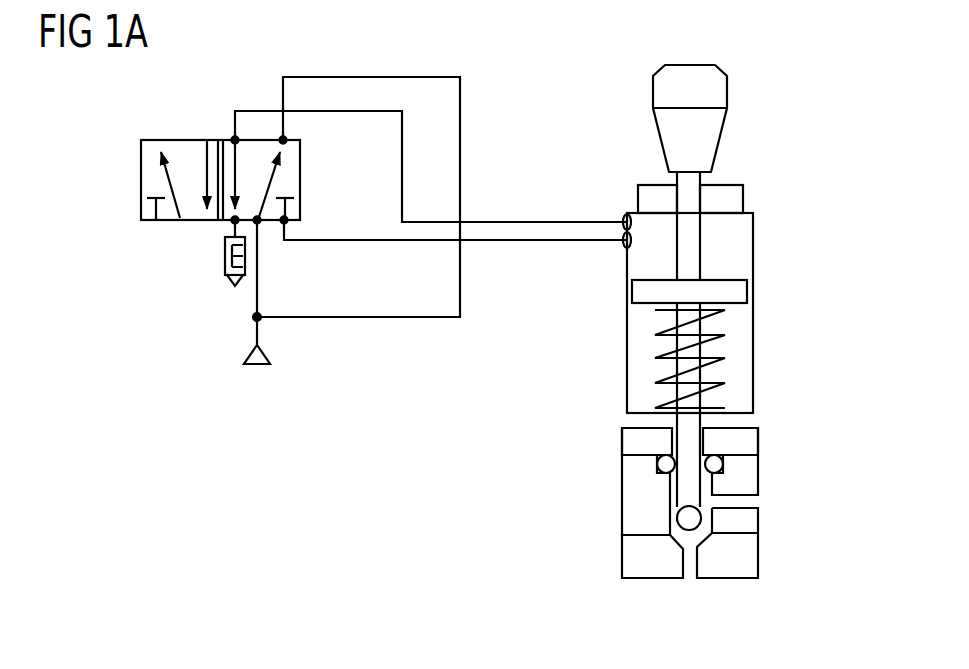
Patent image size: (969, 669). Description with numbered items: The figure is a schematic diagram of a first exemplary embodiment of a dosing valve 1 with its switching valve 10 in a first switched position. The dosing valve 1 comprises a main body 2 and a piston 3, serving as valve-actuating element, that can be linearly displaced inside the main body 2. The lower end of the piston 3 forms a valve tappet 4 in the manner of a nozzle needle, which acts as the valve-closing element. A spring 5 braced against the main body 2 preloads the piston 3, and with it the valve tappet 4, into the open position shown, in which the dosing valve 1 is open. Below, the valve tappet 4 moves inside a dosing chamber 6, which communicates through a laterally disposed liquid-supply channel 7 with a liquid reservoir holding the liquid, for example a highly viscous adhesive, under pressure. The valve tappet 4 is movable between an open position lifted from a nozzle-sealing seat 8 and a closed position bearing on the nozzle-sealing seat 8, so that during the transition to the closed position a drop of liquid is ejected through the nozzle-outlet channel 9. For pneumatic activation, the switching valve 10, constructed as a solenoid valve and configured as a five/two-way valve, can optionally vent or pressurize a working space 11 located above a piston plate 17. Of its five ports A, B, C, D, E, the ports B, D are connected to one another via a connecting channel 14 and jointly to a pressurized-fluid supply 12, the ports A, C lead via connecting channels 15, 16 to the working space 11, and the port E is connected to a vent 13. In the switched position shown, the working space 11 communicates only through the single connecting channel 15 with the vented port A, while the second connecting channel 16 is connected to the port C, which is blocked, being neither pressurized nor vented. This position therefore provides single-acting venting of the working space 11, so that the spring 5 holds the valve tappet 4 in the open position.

The dosing valve 1 is at (770, 115).
The main body 2 is at (754, 262).
The piston 3 is at (711, 376).
The valve tappet 4 is at (690, 496).
The spring 5 is at (719, 326).
The dosing chamber 6 is at (668, 522).
The liquid-supply channel 7 is at (752, 505).
The nozzle-sealing seat 8 is at (658, 557).
The nozzle-outlet channel 9 is at (691, 590).
The switching valve 10 is at (124, 178).
The working space 11 is at (740, 228).
The pressurized-fluid supply 12 is at (236, 357).
The vent 13 is at (214, 278).
The connecting channel 14 is at (461, 113).
The connecting channel 15 is at (526, 221).
The connecting channel 16 is at (528, 244).
The piston plate 17 is at (742, 293).
The port A is at (222, 125).
The port B is at (300, 134).
The port C is at (296, 235).
The port D is at (266, 238).
The port E is at (221, 231).